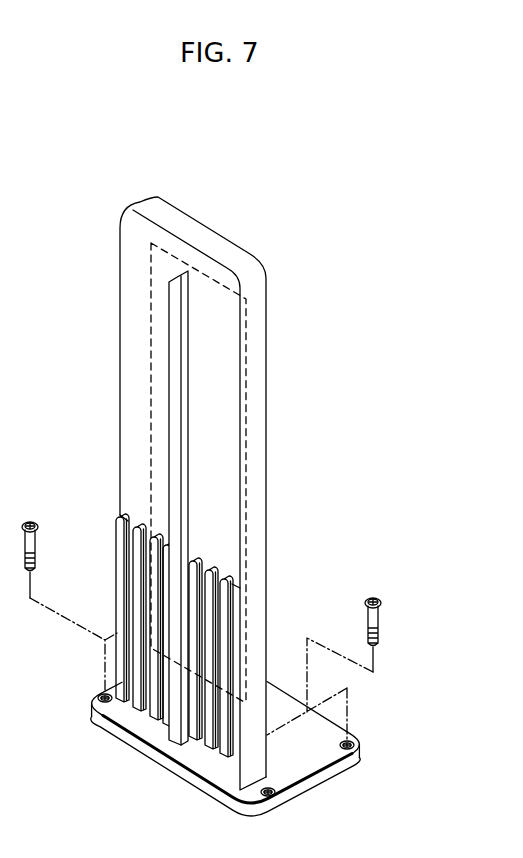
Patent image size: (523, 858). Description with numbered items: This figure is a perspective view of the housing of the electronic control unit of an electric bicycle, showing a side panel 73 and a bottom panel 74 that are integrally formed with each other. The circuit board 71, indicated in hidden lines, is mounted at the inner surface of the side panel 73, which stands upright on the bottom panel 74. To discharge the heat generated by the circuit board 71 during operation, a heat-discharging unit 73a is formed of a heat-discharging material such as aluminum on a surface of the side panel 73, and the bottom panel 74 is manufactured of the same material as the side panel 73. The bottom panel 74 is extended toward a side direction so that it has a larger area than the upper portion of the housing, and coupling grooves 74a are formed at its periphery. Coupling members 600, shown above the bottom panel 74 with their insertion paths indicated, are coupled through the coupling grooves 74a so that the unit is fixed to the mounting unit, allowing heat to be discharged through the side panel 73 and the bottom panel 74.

The circuit board 71 is at (203, 275).
The side panel 73 is at (153, 506).
The heat-discharging unit 73a is at (208, 710).
The bottom panel 74 is at (249, 752).
The coupling groove 74a is at (353, 738).
The coupling member 600 is at (383, 622).